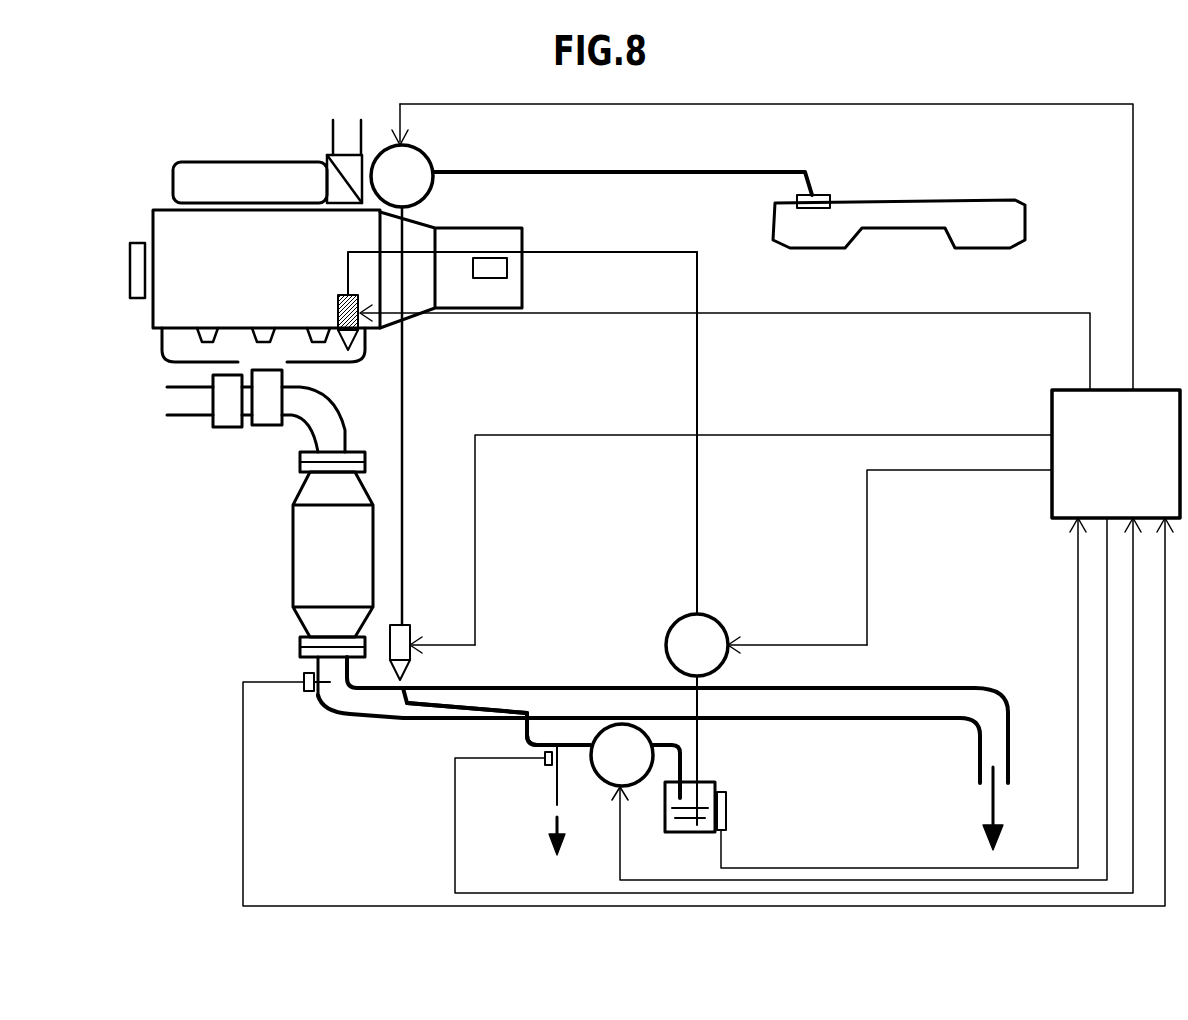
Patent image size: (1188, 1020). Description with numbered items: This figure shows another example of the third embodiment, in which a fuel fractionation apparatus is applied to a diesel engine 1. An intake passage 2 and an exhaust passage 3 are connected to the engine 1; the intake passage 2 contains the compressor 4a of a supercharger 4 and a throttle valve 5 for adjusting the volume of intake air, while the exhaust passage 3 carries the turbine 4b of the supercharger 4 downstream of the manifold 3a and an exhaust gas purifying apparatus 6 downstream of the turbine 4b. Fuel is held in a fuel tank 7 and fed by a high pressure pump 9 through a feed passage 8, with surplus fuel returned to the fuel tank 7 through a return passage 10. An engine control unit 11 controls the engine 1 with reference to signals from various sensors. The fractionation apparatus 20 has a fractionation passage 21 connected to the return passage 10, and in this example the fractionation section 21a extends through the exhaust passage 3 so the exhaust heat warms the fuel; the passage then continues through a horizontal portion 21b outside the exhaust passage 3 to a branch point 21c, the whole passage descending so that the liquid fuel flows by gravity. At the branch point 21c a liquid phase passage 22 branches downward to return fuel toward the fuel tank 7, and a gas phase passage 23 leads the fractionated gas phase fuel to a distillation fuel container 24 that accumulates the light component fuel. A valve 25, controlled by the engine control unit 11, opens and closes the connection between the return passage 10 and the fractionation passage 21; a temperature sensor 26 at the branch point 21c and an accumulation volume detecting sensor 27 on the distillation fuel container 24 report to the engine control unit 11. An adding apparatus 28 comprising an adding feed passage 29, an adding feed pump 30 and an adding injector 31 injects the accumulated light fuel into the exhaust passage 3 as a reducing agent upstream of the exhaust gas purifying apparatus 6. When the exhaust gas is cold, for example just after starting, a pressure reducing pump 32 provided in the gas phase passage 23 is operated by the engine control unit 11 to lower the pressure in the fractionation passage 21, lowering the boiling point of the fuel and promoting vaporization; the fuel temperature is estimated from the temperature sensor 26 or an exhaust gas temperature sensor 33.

The diesel engine 1 is at (140, 224).
The intake passage 2 is at (205, 166).
The exhaust passage 3 is at (857, 718).
The manifold 3a is at (163, 352).
The supercharger 4 is at (242, 470).
The compressor 4a is at (228, 427).
The turbine 4b is at (265, 425).
The throttle valve 5 is at (327, 157).
The exhaust gas purifying apparatus 6 is at (293, 550).
The fuel tank 7 is at (950, 200).
The feed passage 8 is at (658, 170).
The high pressure pump 9 is at (433, 165).
The return passage 10 is at (404, 470).
The engine control unit (ECU) 11 is at (1052, 392).
The fractionation apparatus 20 is at (428, 770).
The fractionation passage 21 is at (425, 720).
The fractionation section 21a is at (482, 705).
The horizontal portion 21b is at (547, 745).
The branch point 21c is at (555, 745).
The liquid phase passage 22 is at (555, 790).
The gas phase passage 23 is at (575, 745).
The distillation fuel container 24 is at (690, 833).
The valve 25 is at (410, 635).
The temperature sensor 26 is at (546, 763).
The accumulation volume detecting sensor 27 is at (727, 810).
The adding apparatus 28 is at (672, 580).
The adding feed passage 29 is at (699, 380).
The adding feed pump 30 is at (718, 620).
The adding injector 31 is at (338, 310).
The pressure reducing pump 32 is at (618, 785).
The exhaust gas temperature sensor 33 is at (318, 692).